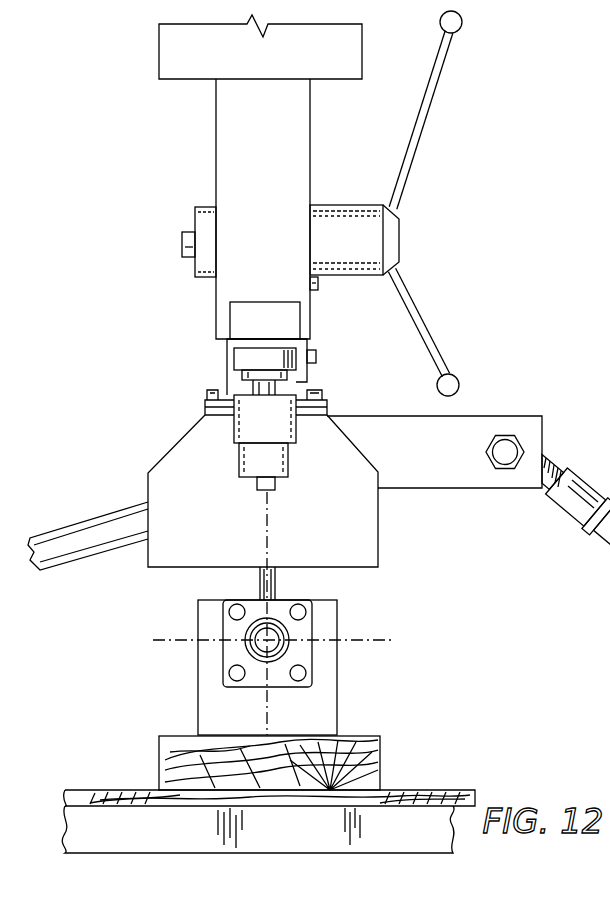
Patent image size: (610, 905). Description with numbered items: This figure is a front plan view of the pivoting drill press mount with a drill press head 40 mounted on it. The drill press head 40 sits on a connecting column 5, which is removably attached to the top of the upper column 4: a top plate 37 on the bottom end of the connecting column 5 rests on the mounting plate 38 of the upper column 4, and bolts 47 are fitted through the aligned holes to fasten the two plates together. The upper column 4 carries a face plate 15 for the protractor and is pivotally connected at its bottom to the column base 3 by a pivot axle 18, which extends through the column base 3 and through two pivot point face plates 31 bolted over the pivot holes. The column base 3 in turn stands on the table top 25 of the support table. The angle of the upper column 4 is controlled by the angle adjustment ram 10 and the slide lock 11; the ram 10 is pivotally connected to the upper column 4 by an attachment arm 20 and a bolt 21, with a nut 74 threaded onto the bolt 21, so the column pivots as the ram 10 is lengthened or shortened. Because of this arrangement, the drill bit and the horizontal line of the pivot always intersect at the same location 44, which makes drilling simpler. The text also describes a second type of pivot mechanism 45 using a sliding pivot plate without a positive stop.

The drill press head 40 is at (287, 180).
The bolts 47 is at (410, 178).
The connecting column 5 is at (225, 375).
The top plate 37 is at (205, 403).
The mounting plate 38 is at (205, 410).
The intersection location 44 is at (234, 430).
The second type of pivot mechanism 45 is at (288, 463).
The upper column 4 is at (216, 491).
The face plate 15 is at (218, 538).
The angle adjustment ram 10 is at (97, 506).
The attachment arm 20 is at (410, 489).
The nut 74 is at (502, 436).
The bolt 21 is at (504, 465).
The slide lock 11 is at (588, 472).
The column base 3 is at (198, 700).
The pivot point face plates 31 is at (312, 666).
The pivot axle 18 is at (275, 640).
The table top 25 is at (130, 790).